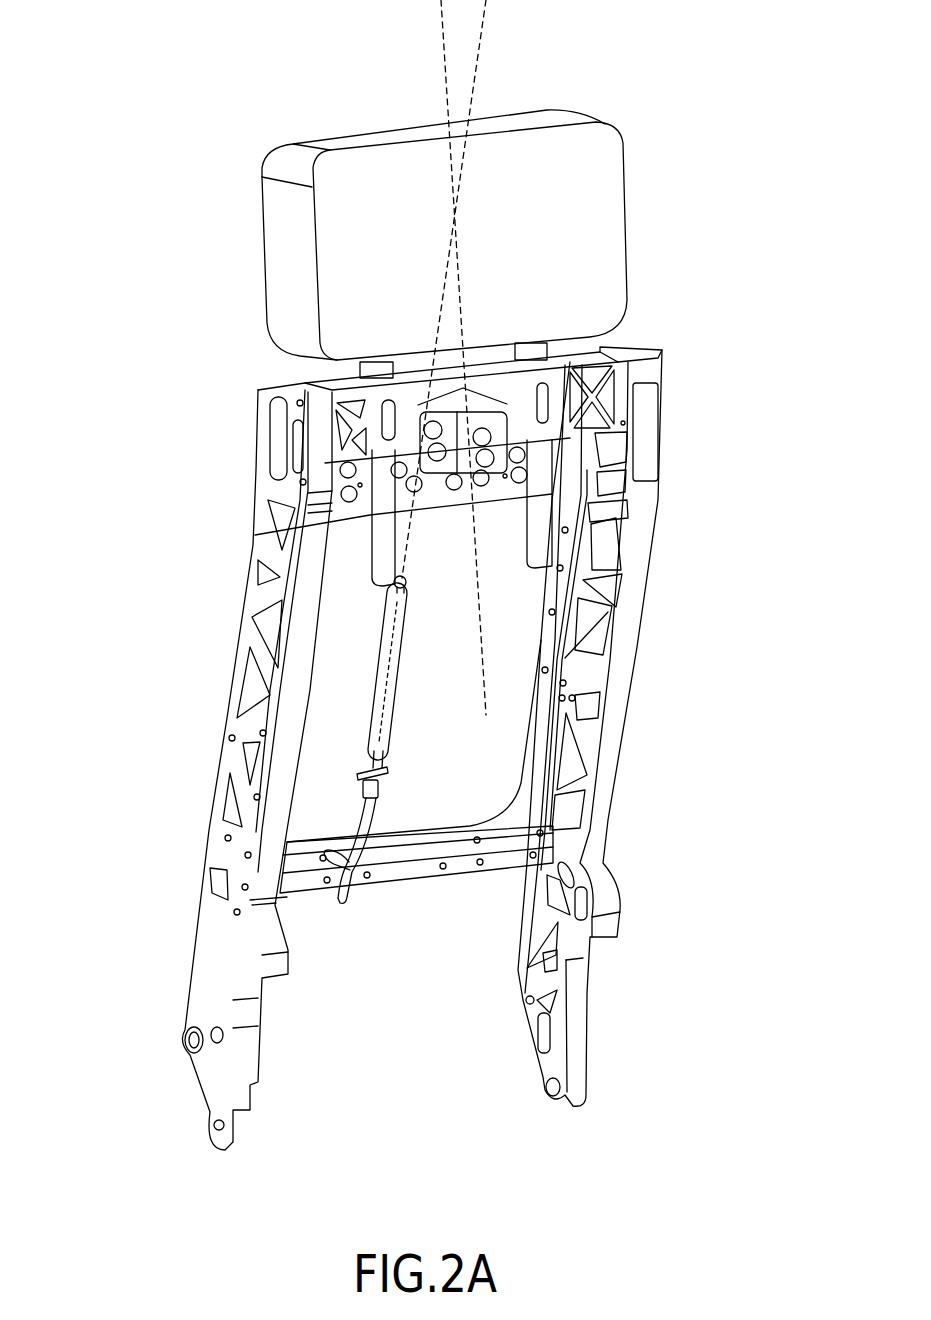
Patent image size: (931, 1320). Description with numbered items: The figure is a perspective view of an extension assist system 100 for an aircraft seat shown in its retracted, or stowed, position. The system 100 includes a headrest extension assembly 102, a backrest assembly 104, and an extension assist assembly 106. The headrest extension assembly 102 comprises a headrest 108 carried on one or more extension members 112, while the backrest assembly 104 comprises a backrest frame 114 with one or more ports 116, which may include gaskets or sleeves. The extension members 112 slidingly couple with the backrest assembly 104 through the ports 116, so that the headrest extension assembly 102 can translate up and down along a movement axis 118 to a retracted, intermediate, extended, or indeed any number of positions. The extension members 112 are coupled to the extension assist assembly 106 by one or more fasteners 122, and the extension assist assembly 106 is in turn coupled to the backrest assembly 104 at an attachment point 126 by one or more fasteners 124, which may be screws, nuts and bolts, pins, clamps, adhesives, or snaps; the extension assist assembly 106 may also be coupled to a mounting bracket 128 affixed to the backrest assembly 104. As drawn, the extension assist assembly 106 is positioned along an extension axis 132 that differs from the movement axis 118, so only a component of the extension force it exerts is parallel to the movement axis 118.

The extension assist system 100 is at (167, 97).
The headrest extension assembly 102 is at (673, 217).
The backrest assembly 104 is at (662, 733).
The extension assist assembly 106 is at (378, 730).
The headrest 108 is at (290, 256).
The extension members 112 is at (383, 523).
The backrest frame 114 is at (632, 578).
The ports 116 is at (373, 373).
The movement axis 118 is at (440, 18).
The fastener 122 is at (395, 583).
The fastener 124 is at (364, 789).
The attachment point 126 is at (377, 772).
The mounting bracket 128 is at (345, 887).
The extension axis 132 is at (487, 28).